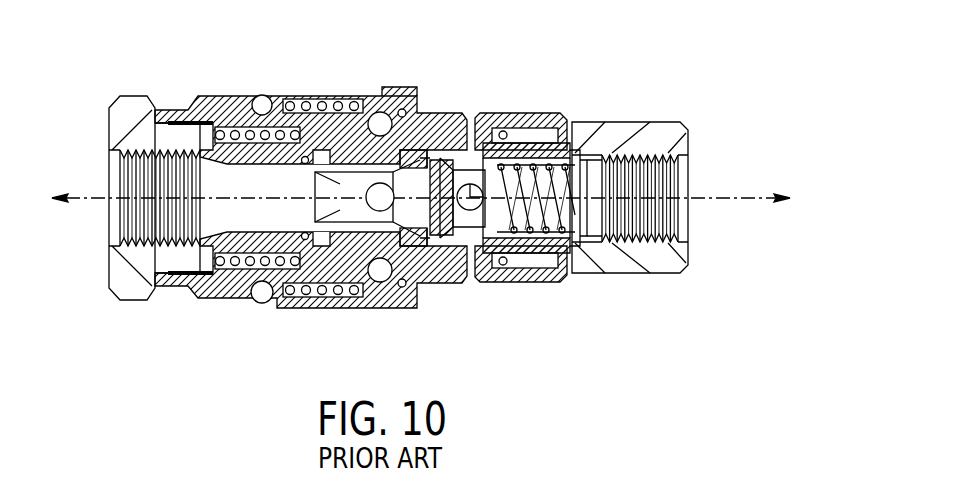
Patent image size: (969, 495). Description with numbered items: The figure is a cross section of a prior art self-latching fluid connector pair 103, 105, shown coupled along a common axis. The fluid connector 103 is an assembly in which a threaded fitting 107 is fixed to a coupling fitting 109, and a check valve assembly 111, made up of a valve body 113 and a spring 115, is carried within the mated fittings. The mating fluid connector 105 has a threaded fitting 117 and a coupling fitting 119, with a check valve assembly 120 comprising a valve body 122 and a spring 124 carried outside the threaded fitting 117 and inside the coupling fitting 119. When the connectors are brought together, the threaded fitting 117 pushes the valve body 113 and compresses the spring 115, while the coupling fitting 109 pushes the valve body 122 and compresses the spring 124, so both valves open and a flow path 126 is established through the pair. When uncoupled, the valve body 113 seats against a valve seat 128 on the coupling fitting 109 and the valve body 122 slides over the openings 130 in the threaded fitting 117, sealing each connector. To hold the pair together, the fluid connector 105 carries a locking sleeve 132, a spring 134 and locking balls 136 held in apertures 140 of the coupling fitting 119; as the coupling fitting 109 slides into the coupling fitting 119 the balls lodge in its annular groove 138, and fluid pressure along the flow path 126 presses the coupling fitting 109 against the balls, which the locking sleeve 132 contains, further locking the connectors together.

The fluid connector 103 is at (668, 111).
The fluid connector 105 is at (118, 258).
The threaded fitting 107 is at (637, 267).
The coupling fitting 109 is at (522, 118).
The check valve assembly 111 is at (481, 270).
The valve body 113 is at (558, 118).
The spring 115 is at (558, 263).
The threaded fitting 117 is at (122, 108).
The coupling fitting 119 is at (223, 108).
The check valve assembly 120 is at (230, 288).
The valve body 122 is at (340, 113).
The spring 124 is at (200, 295).
The flow path 126 is at (718, 196).
The valve seat 128 is at (438, 115).
The openings 130 is at (250, 273).
The locking sleeve 132 is at (401, 90).
The spring 134 is at (312, 107).
The locking balls 136 is at (402, 90).
The annular groove 138 is at (379, 272).
The apertures 140 is at (370, 294).